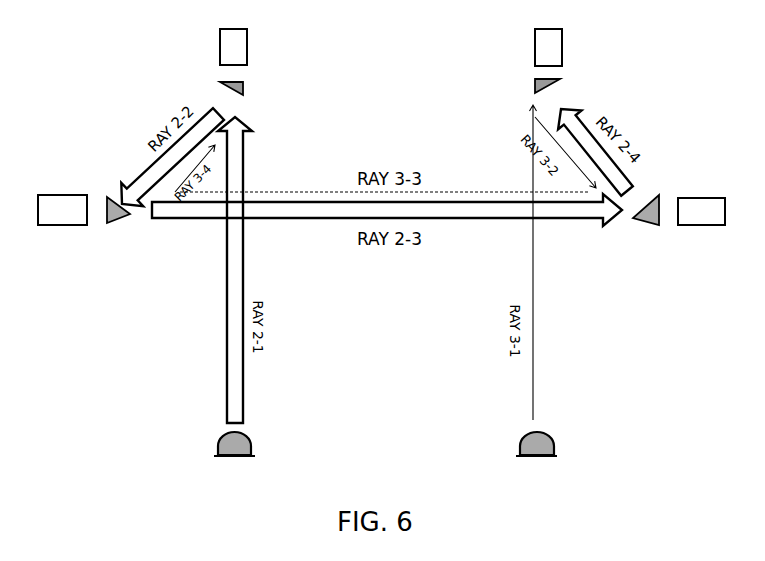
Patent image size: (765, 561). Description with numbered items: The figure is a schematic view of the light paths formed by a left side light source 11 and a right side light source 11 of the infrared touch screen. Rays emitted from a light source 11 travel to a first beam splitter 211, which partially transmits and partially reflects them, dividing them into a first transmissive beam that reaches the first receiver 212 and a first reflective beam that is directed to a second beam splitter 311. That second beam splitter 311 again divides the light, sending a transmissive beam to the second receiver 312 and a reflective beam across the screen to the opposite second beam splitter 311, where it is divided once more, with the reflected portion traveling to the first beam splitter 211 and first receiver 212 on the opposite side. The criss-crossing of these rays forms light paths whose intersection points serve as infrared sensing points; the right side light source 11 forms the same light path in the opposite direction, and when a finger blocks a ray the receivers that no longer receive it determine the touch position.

The light source 11 is at (252, 446).
The first beam splitter 211 is at (246, 93).
The first receiver 212 is at (247, 45).
The second beam splitter 311 is at (108, 195).
The second receiver 312 is at (58, 198).